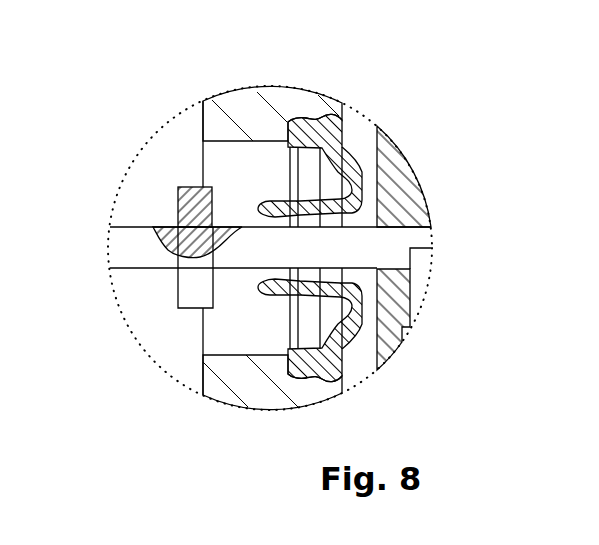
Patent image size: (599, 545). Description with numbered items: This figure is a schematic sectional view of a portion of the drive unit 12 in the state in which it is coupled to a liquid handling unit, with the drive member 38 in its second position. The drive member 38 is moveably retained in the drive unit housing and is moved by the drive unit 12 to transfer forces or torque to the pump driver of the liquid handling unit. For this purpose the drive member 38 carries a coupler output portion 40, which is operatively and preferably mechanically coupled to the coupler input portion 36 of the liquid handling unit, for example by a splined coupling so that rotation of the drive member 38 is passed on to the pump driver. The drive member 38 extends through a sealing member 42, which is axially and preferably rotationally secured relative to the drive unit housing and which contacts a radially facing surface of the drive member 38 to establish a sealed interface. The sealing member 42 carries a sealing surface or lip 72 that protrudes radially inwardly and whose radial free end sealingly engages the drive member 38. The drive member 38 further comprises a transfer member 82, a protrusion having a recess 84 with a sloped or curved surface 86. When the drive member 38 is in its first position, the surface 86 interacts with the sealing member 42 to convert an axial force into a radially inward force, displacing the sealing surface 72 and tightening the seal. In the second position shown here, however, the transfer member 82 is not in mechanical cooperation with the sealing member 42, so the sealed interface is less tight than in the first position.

The drive unit 12 is at (281, 112).
The coupler input portion 36 is at (424, 266).
The drive member 38 is at (415, 236).
The coupler output portion 40 is at (405, 190).
The sealing member 42 is at (343, 117).
The sealing surface or lip 72 is at (283, 272).
The transfer member 82 is at (206, 211).
The recess 84 is at (205, 216).
The sloped or curved surface 86 is at (218, 213).